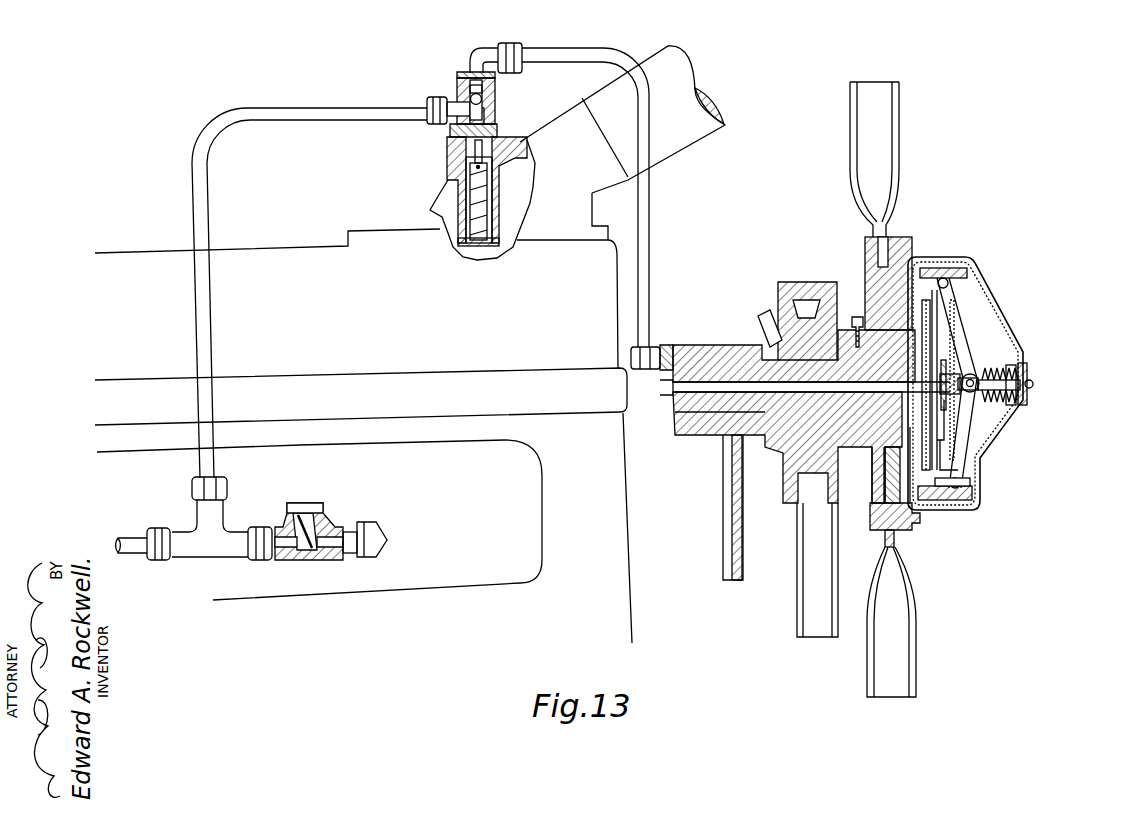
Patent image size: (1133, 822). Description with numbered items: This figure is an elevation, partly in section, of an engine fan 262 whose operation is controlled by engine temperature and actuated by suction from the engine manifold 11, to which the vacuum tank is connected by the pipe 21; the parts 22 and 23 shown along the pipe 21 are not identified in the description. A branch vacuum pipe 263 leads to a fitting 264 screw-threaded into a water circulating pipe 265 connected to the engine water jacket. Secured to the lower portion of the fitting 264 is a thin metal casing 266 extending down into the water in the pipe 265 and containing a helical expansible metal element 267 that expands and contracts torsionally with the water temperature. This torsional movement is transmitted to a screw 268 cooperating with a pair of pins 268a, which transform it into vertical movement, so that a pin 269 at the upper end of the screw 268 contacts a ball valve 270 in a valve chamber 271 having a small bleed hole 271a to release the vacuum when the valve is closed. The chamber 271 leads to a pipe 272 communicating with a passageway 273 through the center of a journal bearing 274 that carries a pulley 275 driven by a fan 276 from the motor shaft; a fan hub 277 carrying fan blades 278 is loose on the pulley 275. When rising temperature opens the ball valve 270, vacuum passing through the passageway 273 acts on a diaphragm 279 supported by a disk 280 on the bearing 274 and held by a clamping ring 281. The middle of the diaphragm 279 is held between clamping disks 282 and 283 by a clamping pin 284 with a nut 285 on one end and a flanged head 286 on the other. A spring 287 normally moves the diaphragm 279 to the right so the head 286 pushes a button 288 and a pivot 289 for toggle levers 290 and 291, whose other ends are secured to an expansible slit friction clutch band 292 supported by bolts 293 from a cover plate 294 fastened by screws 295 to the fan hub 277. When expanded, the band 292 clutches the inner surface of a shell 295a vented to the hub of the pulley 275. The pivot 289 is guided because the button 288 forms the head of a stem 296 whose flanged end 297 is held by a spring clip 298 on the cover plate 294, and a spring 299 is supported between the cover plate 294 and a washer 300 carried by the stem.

The engine manifold 11 is at (416, 583).
The pipe 21 is at (128, 555).
The tee fitting 22 is at (307, 503).
The connector nut 23 is at (338, 525).
The engine fan 262 is at (908, 535).
The branch vacuum pipe 263 is at (210, 412).
The fitting 264 is at (497, 112).
The water circulating pipe 265 is at (593, 187).
The thin metal casing 266 is at (492, 195).
The helical expansible metal element 267 is at (483, 177).
The screw 268 is at (456, 133).
The pins 268a is at (484, 127).
The pin 269 is at (460, 102).
The ball valve 270 is at (500, 85).
The valve chamber 271 is at (467, 64).
The bleed hole 271a is at (490, 98).
The pipe 272 is at (616, 60).
The passageway 273 is at (727, 390).
The journal bearing 274 is at (730, 400).
The pulley 275 is at (781, 293).
The fan 276 is at (810, 585).
The fan hub 277 is at (910, 236).
The fan blades 278 is at (892, 194).
The diaphragm 279 is at (957, 337).
The disk 280 is at (922, 508).
The clamping ring 281 is at (963, 468).
The clamping disk 282 is at (942, 316).
The clamping disk 283 is at (940, 398).
The clamping pin 284 is at (982, 376).
The nut 285 is at (972, 372).
The flanged head 286 is at (958, 395).
The spring 287 is at (960, 430).
The button 288 is at (990, 378).
The pivot 289 is at (1033, 383).
The toggle lever 290 is at (950, 360).
The toggle lever 291 is at (962, 443).
The expansible slit friction clutch band 292 is at (958, 283).
The bolts 293 is at (985, 485).
The cover plate 294 is at (977, 503).
The screws 295 is at (908, 535).
The shell 295a is at (870, 503).
The stem 296 is at (1024, 381).
The flanged end 297 is at (1022, 396).
The spring clip 298 is at (1027, 372).
The spring 299 is at (1016, 400).
The washer 300 is at (980, 385).